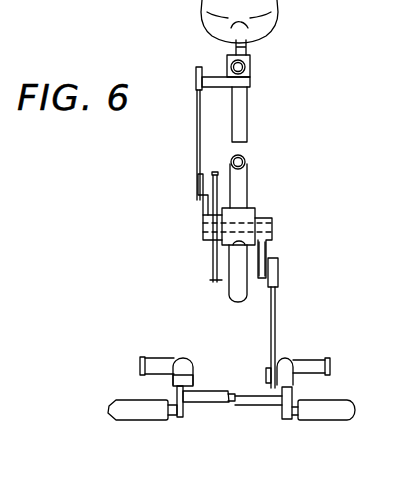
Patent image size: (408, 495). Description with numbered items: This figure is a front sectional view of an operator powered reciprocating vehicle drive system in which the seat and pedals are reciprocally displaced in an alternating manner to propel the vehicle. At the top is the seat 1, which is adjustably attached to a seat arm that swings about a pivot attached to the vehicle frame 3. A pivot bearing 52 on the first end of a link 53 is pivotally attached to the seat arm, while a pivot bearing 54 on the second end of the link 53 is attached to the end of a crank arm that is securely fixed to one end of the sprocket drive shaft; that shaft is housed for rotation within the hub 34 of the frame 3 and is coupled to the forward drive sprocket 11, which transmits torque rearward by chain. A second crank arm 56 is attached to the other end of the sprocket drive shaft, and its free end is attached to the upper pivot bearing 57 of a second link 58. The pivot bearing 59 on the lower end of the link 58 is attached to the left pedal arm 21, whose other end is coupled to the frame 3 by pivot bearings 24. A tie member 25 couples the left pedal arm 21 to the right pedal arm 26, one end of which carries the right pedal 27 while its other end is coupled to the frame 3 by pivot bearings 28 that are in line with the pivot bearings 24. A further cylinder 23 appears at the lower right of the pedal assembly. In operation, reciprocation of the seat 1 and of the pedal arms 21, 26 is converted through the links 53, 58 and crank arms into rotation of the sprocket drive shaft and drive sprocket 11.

The seat 1 is at (280, 25).
The vehicle frame 3 is at (248, 182).
The drive sprocket 11 is at (205, 250).
The left pedal arm 21 is at (295, 383).
The cylinder 23 is at (325, 421).
The pivot bearings 24 is at (315, 357).
The tie member 25 is at (201, 403).
The right pedal arm 26 is at (172, 386).
The right pedal 27 is at (118, 421).
The pivot bearings 28 is at (142, 357).
The hub 34 is at (252, 208).
The pivot bearing 52 is at (197, 73).
The link 53 is at (197, 131).
The pivot bearing 54 is at (192, 177).
The second crank arm 56 is at (272, 255).
The upper pivot bearing 57 is at (279, 264).
The link 58 is at (278, 307).
The pivot bearing 59 is at (267, 368).